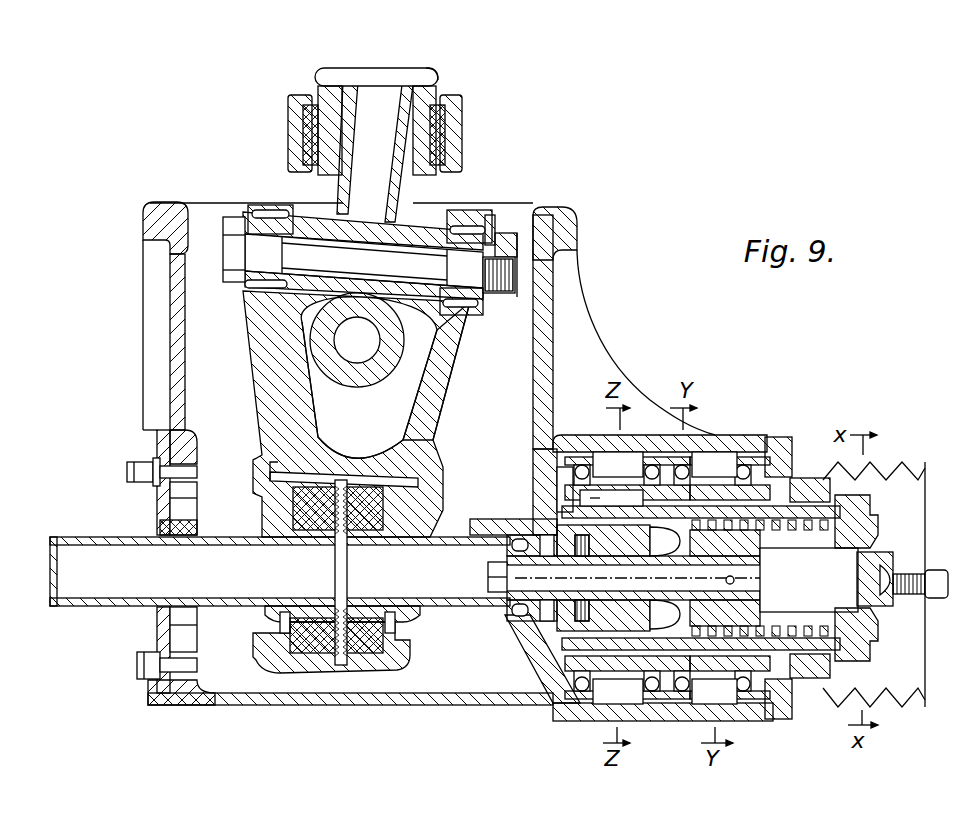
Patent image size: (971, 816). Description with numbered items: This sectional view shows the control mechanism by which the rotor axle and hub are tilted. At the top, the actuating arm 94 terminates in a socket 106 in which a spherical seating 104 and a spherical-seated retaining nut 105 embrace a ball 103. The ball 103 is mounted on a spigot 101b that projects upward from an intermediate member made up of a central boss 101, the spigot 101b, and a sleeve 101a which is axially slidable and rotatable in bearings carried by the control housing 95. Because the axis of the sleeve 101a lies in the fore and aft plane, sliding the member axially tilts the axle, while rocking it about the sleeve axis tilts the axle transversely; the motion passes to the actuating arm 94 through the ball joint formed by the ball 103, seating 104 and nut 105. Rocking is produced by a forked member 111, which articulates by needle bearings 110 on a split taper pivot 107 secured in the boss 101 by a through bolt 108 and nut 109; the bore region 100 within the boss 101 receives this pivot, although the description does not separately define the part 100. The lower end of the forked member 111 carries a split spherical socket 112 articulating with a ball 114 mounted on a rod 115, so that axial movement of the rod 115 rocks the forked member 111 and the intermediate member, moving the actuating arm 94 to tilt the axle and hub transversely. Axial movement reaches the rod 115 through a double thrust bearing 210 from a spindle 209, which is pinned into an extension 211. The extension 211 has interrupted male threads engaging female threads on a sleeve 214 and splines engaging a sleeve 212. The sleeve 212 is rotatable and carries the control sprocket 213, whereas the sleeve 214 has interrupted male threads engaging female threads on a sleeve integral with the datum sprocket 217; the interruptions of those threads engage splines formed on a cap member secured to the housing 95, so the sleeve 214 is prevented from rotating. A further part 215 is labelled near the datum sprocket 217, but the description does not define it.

The actuating arm 94 is at (400, 70).
The control housing 95 is at (555, 268).
The bore 100 is at (370, 348).
The central boss 101 is at (428, 207).
The sleeve 101a is at (362, 393).
The spigot 101b is at (441, 78).
The ball 103 is at (447, 117).
The spherical seating 104 is at (303, 117).
The spherical-seated retaining nut 105 is at (300, 157).
The socket 106 is at (458, 150).
The split taper pivot 107 is at (392, 222).
The through bolt 108 is at (258, 245).
The nut 109 is at (523, 222).
The needle bearings 110 is at (495, 250).
The forked member 111 is at (430, 395).
The split spherical socket 112 is at (420, 476).
The ball 114 is at (350, 537).
The rod 115 is at (423, 545).
The spindle 209 is at (520, 599).
The double thrust bearing 210 is at (510, 519).
The extension 211 is at (763, 560).
The sleeve 212 is at (820, 550).
The control sprocket 213 is at (640, 465).
The sleeve 214 is at (867, 518).
The bearing cap 215 is at (787, 487).
The datum sprocket 217 is at (718, 468).